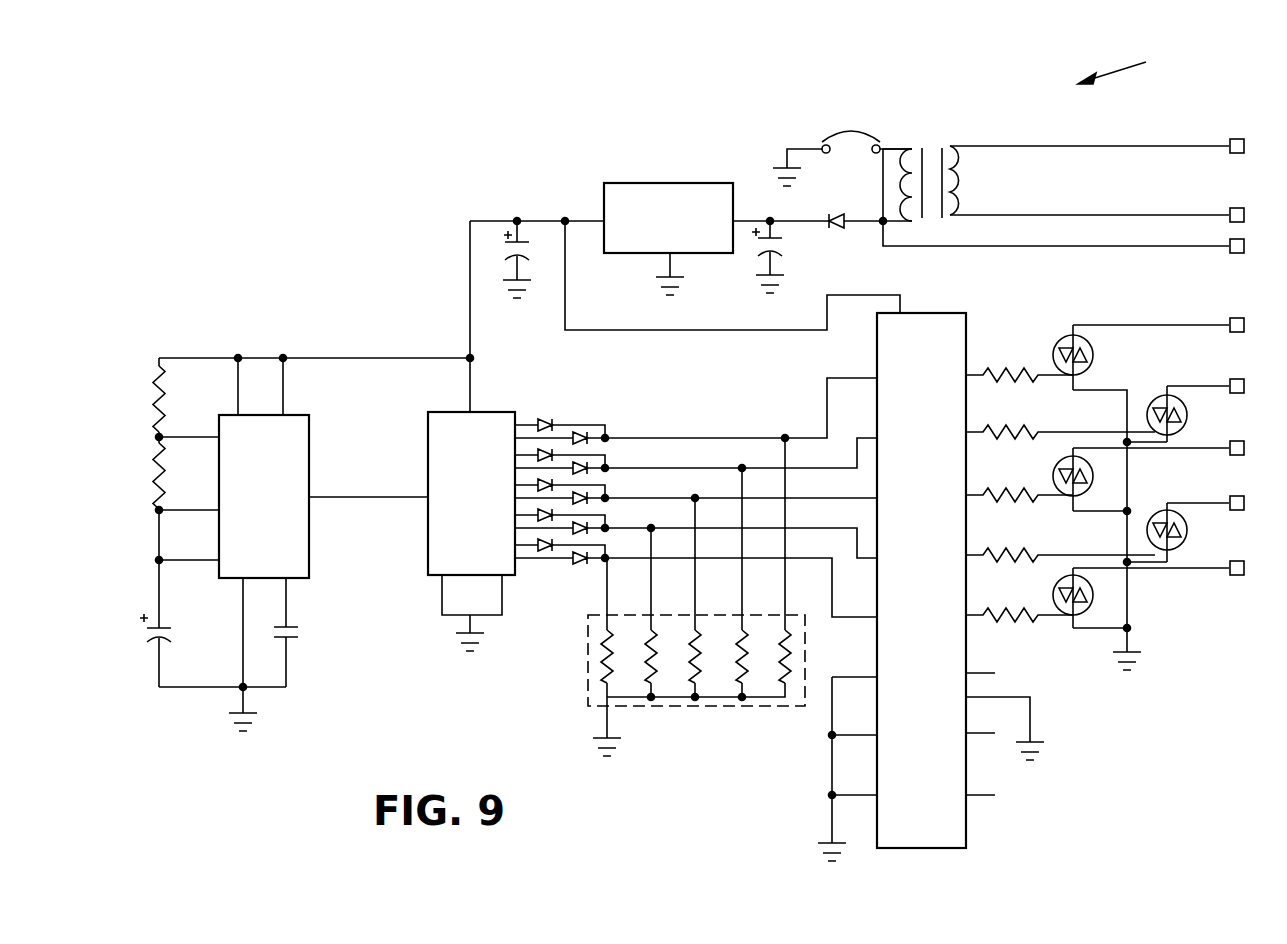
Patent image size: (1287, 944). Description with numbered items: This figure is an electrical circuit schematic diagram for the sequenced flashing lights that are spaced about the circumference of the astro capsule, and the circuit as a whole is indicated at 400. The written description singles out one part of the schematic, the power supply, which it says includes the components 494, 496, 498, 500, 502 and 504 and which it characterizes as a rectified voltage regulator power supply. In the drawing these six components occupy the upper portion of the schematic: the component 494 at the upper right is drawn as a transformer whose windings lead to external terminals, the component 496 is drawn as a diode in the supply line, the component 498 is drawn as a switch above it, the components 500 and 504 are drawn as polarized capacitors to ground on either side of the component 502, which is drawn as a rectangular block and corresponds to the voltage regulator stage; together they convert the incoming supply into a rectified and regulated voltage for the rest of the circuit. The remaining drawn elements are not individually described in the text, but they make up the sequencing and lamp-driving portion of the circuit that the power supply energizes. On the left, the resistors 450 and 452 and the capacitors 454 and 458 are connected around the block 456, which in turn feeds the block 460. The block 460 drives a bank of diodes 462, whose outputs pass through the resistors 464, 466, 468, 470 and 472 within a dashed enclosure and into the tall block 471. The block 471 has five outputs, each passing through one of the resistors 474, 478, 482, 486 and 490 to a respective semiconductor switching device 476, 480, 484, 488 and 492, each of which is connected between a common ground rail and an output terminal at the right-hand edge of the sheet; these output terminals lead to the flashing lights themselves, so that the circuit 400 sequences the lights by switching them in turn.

The control circuit 400 is at (1132, 68).
The resistor 450 is at (152, 385).
The resistor 452 is at (152, 489).
The capacitor 454 is at (150, 636).
The timer circuit 456 is at (310, 432).
The capacitor 458 is at (298, 634).
The counter circuit 460 is at (427, 516).
The diodes 462 is at (571, 424).
The resistor 464 is at (616, 629).
The resistor 466 is at (660, 629).
The resistor 468 is at (703, 629).
The resistor 470 is at (748, 629).
The integrated circuit 471 is at (936, 507).
The resistor 472 is at (791, 629).
The resistor 474 is at (988, 373).
The triac 476 is at (1094, 354).
The resistor 478 is at (988, 430).
The triac 480 is at (1188, 411).
The resistor 482 is at (988, 493).
The triac 484 is at (1094, 476).
The resistor 486 is at (988, 553).
The triac 488 is at (1188, 531).
The resistor 490 is at (988, 613).
The triac 492 is at (1094, 596).
The power supply component 494 is at (952, 147).
The power supply component 496 is at (832, 213).
The power supply component 498 is at (856, 131).
The power supply component 500 is at (782, 246).
The power supply component 502 is at (668, 183).
The power supply component 504 is at (518, 250).